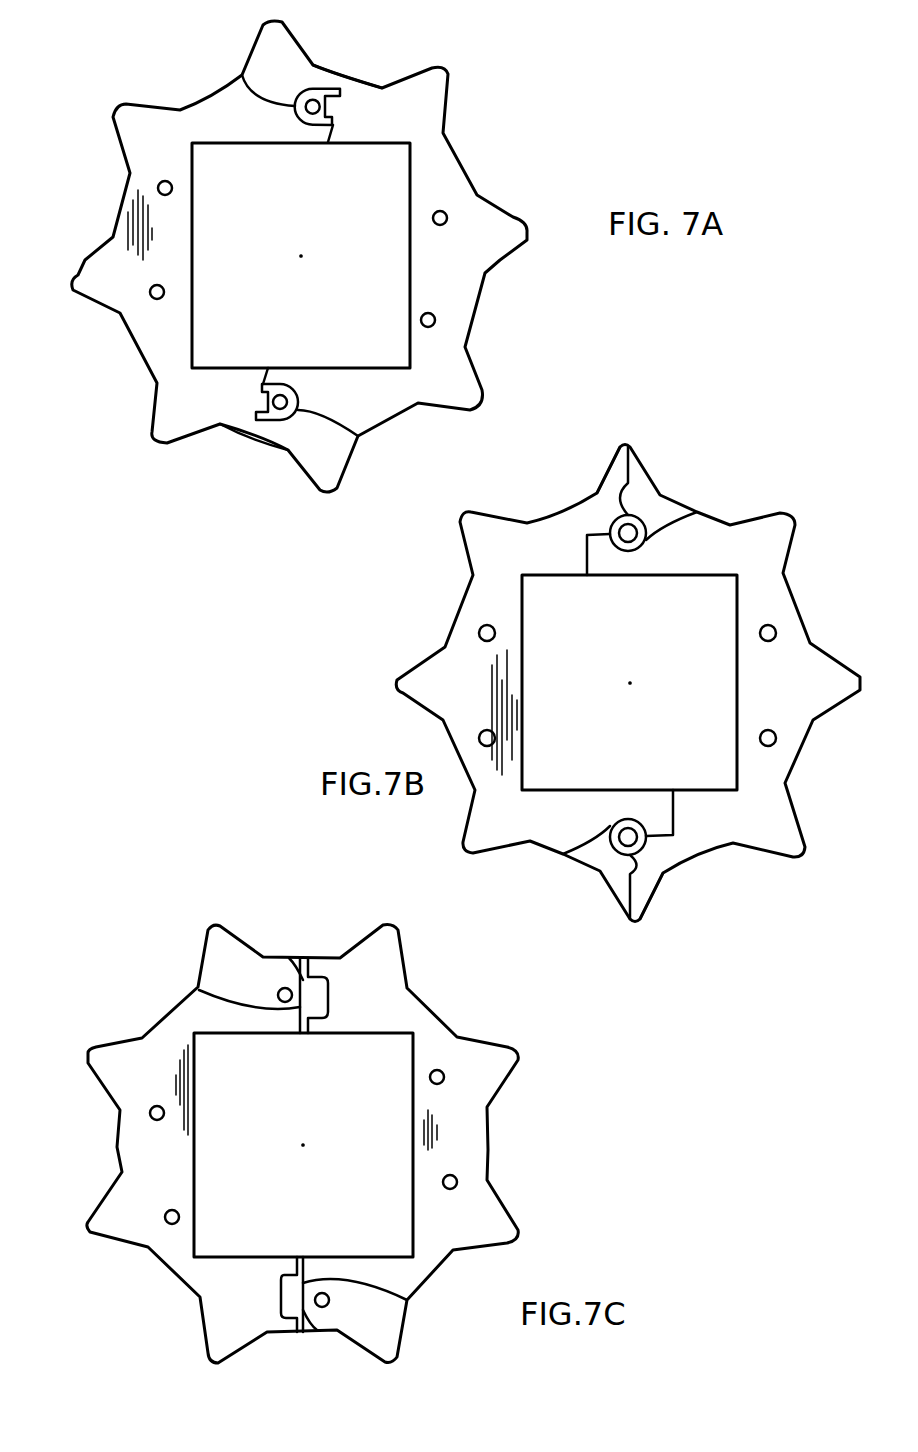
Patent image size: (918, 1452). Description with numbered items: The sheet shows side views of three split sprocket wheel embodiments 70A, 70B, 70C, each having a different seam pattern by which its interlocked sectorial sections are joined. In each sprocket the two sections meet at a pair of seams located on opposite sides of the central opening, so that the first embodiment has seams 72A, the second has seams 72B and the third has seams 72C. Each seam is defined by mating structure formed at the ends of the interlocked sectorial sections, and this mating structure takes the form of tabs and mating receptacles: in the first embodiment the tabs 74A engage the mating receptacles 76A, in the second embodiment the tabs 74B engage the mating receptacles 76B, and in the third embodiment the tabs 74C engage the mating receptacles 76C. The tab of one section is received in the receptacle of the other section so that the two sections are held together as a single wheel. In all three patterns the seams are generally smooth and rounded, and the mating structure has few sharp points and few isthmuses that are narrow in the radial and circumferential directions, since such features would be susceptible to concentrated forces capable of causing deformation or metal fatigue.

In FIG. 7A, the split sprocket embodiment 70A is at (317, 256).
In FIG. 7A, the seam 72A is at (340, 78).
In FIG. 7A, the tab 74A is at (340, 106).
In FIG. 7A, the mating receptacle 76A is at (242, 75).
In FIG. 7B, the split sprocket embodiment 70B is at (870, 584).
In FIG. 7B, the seam 72B is at (628, 482).
In FIG. 7B, the tab 74B is at (603, 518).
In FIG. 7B, the mating receptacle 76B is at (653, 537).
In FIG. 7C, the split sprocket embodiment 70C is at (570, 1151).
In FIG. 7C, the seam 72C is at (305, 960).
In FIG. 7C, the tab 74C is at (298, 992).
In FIG. 7C, the mating receptacle 76C is at (330, 997).